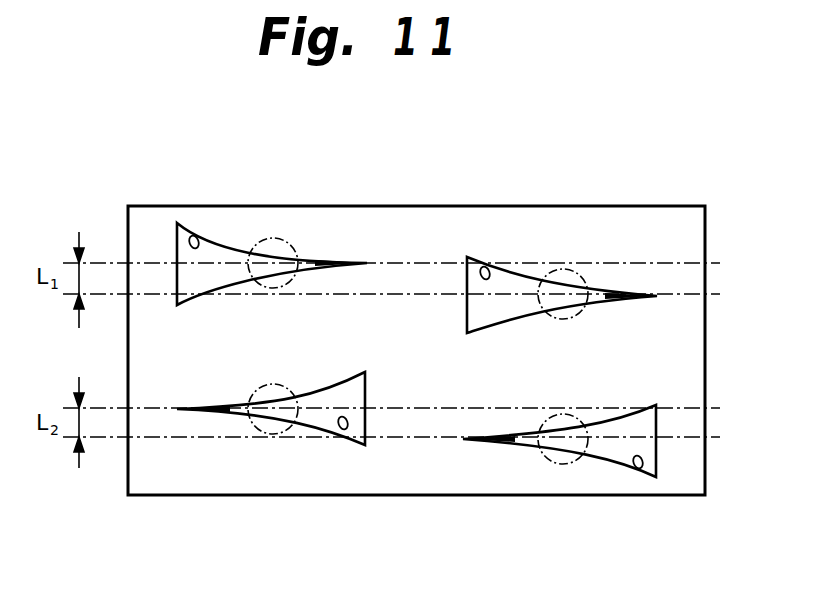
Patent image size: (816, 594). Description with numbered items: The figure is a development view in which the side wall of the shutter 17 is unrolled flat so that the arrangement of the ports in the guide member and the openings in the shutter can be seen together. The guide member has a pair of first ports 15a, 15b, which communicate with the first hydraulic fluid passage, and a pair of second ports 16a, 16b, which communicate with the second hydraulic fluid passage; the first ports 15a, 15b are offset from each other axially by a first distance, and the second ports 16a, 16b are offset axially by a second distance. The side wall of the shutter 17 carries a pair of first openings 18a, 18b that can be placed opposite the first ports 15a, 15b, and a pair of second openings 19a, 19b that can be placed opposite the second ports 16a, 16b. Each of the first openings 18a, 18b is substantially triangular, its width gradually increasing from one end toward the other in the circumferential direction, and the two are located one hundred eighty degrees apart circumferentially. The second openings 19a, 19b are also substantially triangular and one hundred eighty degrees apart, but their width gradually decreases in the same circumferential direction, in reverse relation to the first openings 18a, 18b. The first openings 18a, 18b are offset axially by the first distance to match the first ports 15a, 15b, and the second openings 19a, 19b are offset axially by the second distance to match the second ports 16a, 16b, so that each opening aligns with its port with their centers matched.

The shutter 17 is at (672, 227).
The first port 15a is at (292, 244).
The first port 15b is at (575, 270).
The second port 16a is at (258, 432).
The second port 16b is at (541, 462).
The first opening 18a is at (194, 236).
The first opening 18b is at (486, 267).
The second opening 19a is at (340, 430).
The second opening 19b is at (635, 468).